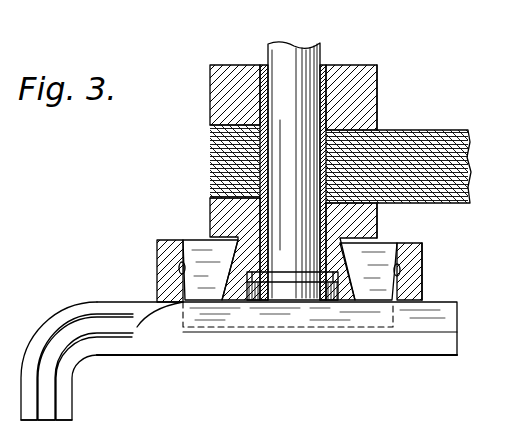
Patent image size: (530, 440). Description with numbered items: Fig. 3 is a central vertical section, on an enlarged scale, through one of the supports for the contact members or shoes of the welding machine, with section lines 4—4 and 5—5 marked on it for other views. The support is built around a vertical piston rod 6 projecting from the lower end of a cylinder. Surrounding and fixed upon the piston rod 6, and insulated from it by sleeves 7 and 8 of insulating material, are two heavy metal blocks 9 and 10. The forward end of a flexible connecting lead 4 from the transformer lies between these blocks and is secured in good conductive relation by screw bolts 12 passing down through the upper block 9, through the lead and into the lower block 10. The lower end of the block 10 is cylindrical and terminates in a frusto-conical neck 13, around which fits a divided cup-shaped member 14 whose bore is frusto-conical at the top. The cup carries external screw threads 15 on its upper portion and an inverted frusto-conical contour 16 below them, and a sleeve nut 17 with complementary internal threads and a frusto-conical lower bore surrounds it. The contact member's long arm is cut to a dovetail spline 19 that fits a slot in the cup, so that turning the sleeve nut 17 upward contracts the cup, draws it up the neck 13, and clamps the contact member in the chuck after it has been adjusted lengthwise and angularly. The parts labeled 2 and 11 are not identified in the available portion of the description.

The base plate 2 is at (371, 350).
The flexible connecting lead 4 is at (448, 131).
The section line 5— 5 is at (197, 61).
The vertical piston rod 6 is at (315, 47).
The sleeve 7 is at (273, 72).
The sleeve 8 is at (342, 303).
The metal block 9 is at (377, 90).
The metal block 10 is at (208, 205).
The left clamp piece 11 is at (202, 243).
The screw bolt 12 is at (206, 108).
The neck 13 is at (355, 255).
The divided cup-shaped member 14 is at (208, 270).
The external screw threads 15 is at (394, 270).
The inverted frusto-conical contour 16 is at (422, 288).
The sleeve nut 17 is at (422, 271).
The dovetail spline 19 is at (172, 314).